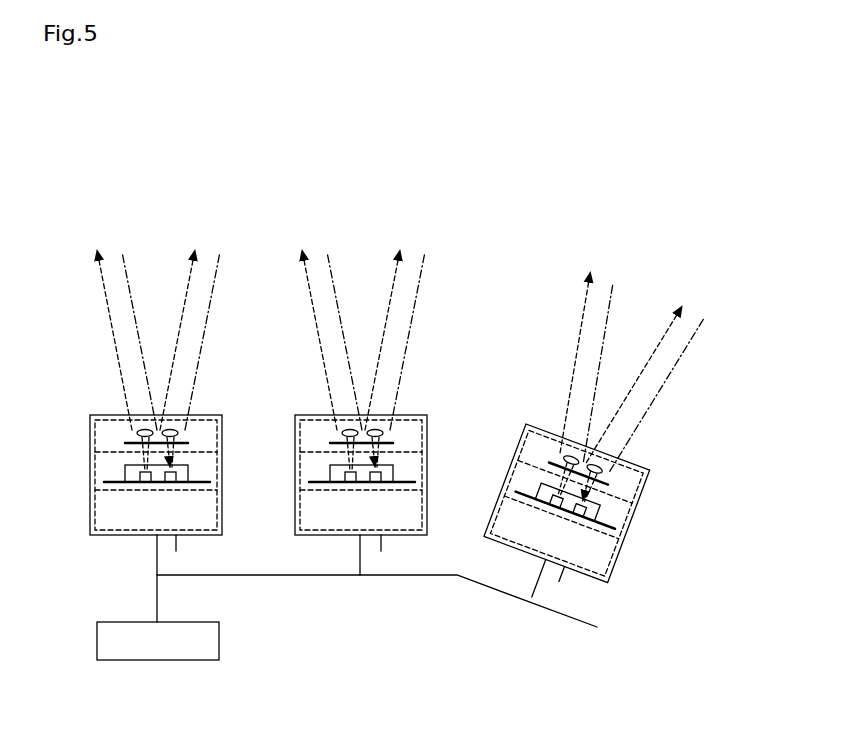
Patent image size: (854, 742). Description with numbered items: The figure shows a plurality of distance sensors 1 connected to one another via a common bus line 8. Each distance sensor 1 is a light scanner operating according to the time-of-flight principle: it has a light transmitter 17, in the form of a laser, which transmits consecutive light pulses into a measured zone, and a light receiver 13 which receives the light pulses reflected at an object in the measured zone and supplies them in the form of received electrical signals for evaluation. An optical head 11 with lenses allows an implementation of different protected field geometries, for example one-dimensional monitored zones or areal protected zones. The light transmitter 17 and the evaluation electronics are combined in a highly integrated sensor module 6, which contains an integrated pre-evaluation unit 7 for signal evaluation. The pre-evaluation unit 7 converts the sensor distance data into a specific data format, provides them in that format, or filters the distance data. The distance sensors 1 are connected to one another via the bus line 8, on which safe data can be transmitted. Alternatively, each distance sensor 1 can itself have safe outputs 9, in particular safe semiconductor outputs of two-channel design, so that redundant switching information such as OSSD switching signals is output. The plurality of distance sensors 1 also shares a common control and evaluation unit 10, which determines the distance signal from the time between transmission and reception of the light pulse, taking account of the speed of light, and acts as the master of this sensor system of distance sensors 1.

The distance sensor 1 is at (212, 361).
The highly integrated sensor module 6 is at (68, 450).
The pre-evaluation unit 7 is at (212, 517).
The bus line 8 is at (153, 590).
The safe outputs 9 is at (180, 549).
The control and evaluation unit 10 is at (92, 519).
The optical head 11 is at (178, 432).
The light receiver 13 is at (175, 483).
The light transmitter 17 is at (132, 483).